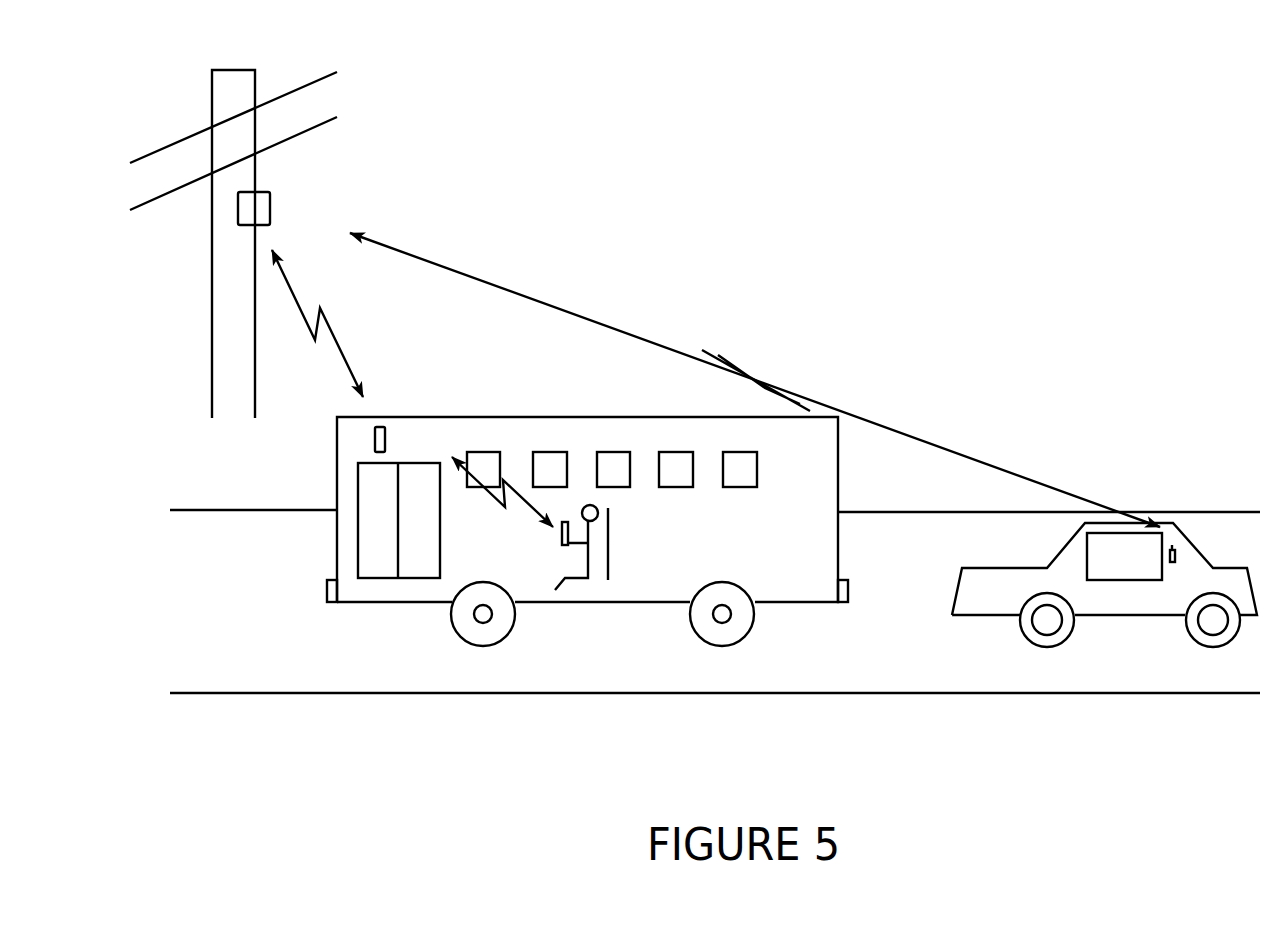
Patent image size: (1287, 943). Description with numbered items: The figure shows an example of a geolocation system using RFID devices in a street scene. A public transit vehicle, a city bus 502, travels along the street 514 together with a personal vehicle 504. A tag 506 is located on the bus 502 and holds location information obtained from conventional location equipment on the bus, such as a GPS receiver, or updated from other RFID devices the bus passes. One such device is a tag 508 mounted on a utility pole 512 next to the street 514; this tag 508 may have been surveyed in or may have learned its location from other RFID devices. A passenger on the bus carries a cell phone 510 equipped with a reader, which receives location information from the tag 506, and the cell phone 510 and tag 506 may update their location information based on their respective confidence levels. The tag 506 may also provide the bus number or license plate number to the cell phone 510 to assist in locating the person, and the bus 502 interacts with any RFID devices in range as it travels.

The city bus 502 is at (563, 417).
The personal vehicle 504 is at (1077, 533).
The tag 506 is at (385, 425).
The tag 508 is at (271, 204).
The cell phone 510 is at (560, 535).
The utility pole 512 is at (211, 262).
The street 514 is at (708, 601).